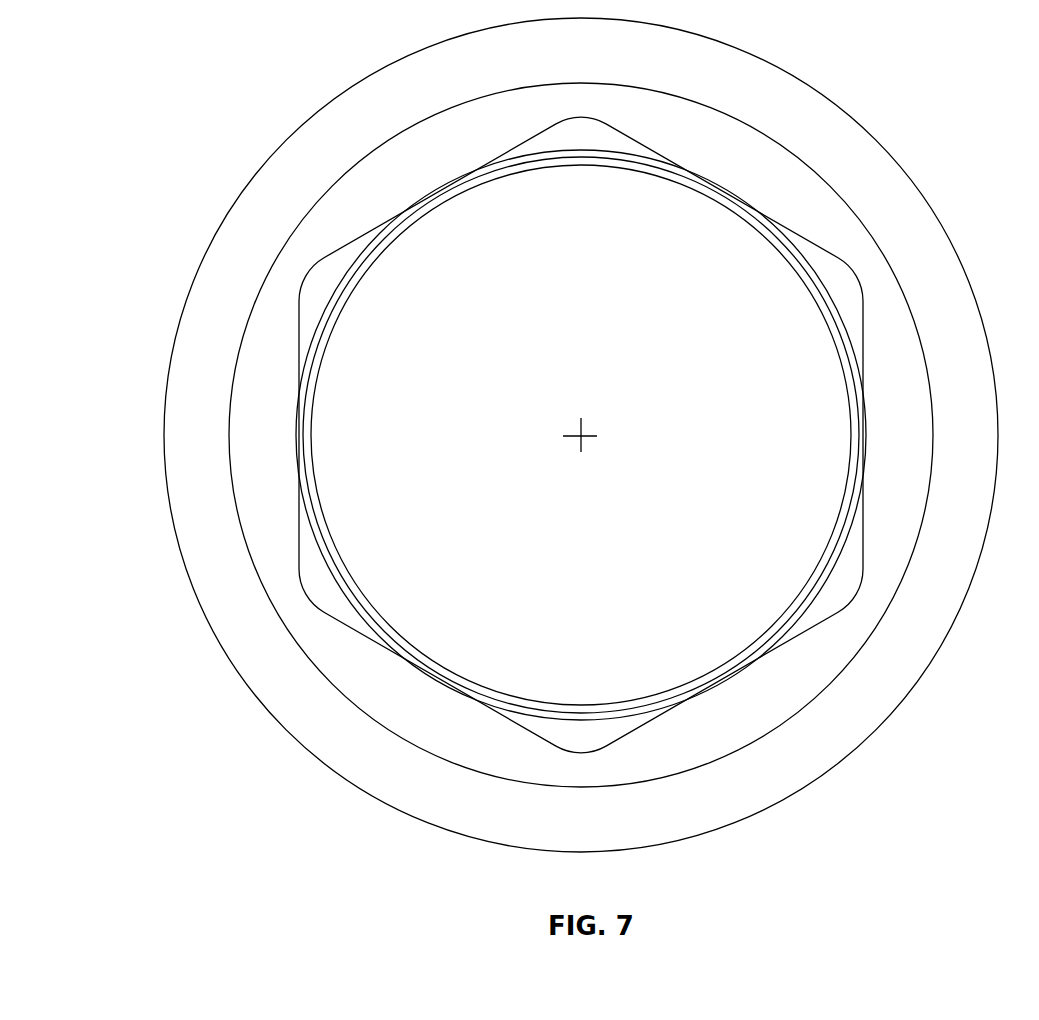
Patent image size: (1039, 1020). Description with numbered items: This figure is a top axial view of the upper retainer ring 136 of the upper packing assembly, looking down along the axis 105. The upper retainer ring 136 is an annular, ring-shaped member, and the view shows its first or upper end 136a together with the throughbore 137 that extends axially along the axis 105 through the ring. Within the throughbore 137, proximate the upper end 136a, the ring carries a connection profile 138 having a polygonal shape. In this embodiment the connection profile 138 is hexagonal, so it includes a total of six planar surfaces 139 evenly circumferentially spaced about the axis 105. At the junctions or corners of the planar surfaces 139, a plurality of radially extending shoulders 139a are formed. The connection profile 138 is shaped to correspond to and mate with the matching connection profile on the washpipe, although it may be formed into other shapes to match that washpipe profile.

The upper retainer ring 136 is at (156, 82).
The first or upper end 136a is at (862, 156).
The throughbore 137 is at (464, 214).
The connection profile 138 is at (341, 640).
The planar surfaces 139 is at (637, 140).
The radially extending shoulders 139a is at (566, 138).
The axis 105 is at (585, 432).